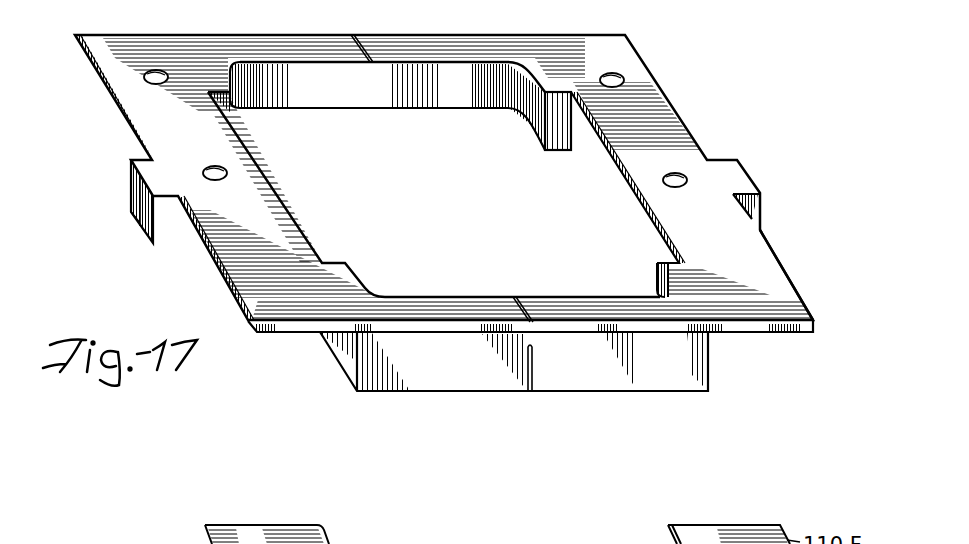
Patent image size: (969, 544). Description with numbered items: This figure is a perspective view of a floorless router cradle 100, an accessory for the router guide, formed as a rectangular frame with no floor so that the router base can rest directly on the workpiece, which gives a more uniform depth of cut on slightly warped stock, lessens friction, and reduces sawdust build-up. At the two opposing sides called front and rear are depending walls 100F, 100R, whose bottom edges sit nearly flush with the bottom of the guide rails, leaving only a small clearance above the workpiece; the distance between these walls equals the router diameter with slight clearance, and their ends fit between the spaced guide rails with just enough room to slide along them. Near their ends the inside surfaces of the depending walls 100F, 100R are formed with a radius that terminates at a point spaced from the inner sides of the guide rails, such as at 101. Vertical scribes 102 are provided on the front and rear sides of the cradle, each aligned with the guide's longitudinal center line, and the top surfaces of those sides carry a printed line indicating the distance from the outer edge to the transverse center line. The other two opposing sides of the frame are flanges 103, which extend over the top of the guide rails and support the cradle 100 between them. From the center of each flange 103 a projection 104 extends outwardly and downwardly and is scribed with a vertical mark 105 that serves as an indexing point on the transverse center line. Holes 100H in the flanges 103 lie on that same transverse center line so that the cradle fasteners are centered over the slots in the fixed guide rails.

The floorless router cradle 100 is at (669, 90).
The holes 100H is at (230, 174).
The rear depending wall 100R is at (430, 92).
The front depending wall 100F is at (443, 378).
The radius termination point 101 is at (562, 122).
The vertical scribes 102 is at (533, 373).
The flanges 103 is at (147, 116).
The projections 104 is at (131, 192).
The vertical mark 105 is at (140, 228).